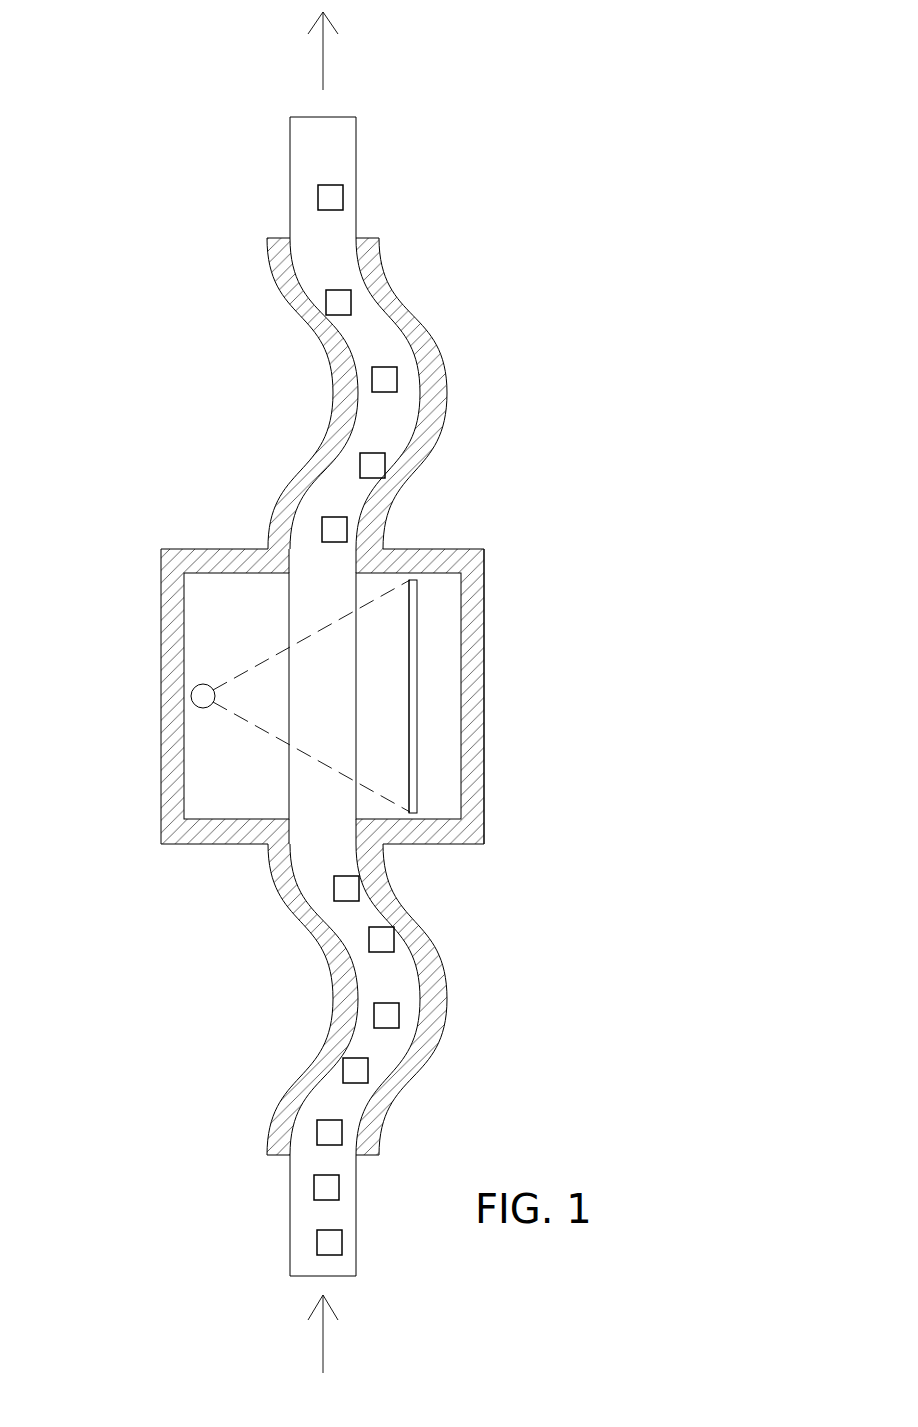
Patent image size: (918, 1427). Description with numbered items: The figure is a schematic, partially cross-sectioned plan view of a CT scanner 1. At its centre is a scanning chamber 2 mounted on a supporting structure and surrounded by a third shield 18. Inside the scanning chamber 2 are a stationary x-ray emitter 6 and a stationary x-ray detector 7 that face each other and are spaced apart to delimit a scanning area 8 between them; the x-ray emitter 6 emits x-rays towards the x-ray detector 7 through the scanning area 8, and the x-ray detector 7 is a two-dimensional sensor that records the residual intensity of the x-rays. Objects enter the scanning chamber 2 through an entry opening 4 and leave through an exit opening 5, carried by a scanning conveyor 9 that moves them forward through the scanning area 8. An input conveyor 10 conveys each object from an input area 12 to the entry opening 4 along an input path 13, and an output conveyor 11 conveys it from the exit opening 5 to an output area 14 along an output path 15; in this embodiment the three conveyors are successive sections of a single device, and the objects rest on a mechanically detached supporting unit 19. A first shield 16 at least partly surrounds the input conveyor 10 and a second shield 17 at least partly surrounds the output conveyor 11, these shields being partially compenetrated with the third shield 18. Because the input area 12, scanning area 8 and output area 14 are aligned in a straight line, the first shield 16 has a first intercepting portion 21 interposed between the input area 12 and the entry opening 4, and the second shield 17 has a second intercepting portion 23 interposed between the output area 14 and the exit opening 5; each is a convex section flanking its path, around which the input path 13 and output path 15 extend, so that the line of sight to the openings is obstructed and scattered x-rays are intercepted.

The CT scanner 1 is at (563, 188).
The scanning chamber 2 is at (348, 720).
The entry opening 4 is at (315, 840).
The exit opening 5 is at (310, 568).
The x-ray emitter 6 is at (198, 695).
The x-ray detector 7 is at (410, 772).
The scanning area 8 is at (412, 699).
The scanning conveyor 9 is at (272, 787).
The input conveyor 10 is at (245, 1204).
The output conveyor 11 is at (235, 221).
The input area 12 is at (362, 1247).
The input path 13 is at (383, 1072).
The output area 14 is at (378, 118).
The output path 15 is at (481, 393).
The first shield 16 is at (434, 958).
The second shield 17 is at (433, 375).
The third shield 18 is at (470, 738).
The supporting unit 19 is at (338, 300).
The first intercepting portion 21 is at (307, 1055).
The second intercepting portion 23 is at (338, 422).